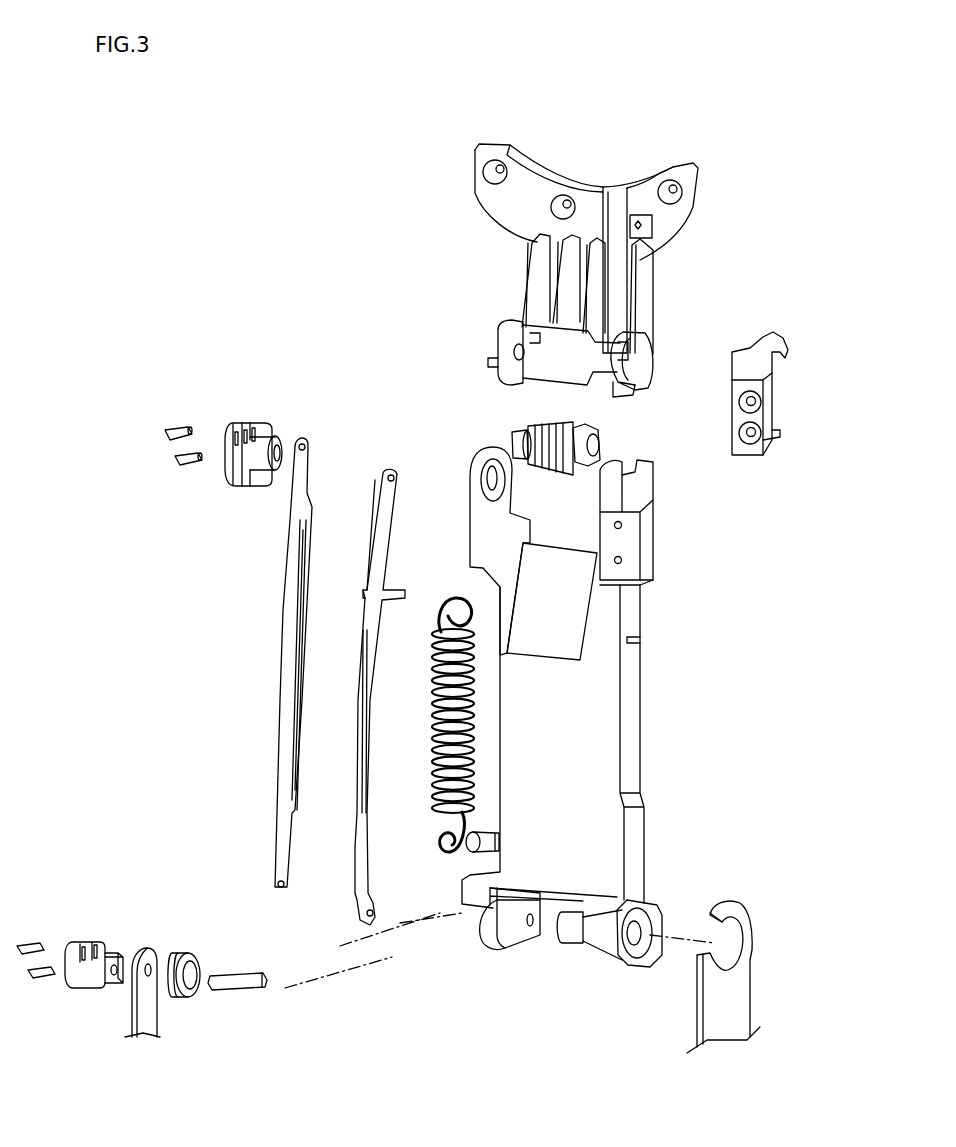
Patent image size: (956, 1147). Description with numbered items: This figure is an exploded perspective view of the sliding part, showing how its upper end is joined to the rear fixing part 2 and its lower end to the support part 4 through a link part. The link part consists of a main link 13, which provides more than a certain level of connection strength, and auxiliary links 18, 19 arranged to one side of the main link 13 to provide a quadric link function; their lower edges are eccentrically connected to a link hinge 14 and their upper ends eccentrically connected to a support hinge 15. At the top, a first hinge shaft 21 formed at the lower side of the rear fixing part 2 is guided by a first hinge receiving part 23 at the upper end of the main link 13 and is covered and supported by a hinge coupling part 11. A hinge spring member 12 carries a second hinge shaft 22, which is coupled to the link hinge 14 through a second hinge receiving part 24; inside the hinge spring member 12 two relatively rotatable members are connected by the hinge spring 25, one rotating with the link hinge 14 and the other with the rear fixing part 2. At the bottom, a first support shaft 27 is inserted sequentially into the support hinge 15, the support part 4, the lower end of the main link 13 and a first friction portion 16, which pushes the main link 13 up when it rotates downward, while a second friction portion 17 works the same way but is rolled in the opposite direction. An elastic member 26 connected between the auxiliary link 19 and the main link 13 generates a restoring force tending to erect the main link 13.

The rear fixing part 2 is at (532, 188).
The first hinge shaft 21 is at (641, 346).
The hinge coupling part 11 is at (783, 340).
The link hinge 14 is at (250, 422).
The auxiliary link 18 is at (283, 638).
The auxiliary link 19 is at (362, 735).
The elastic member 26 is at (437, 737).
The second hinge shaft 22 is at (513, 443).
The hinge spring 25 is at (580, 432).
The second hinge receiving part 24 is at (473, 476).
The first hinge receiving part 23 is at (633, 495).
The hinge spring member 12 is at (559, 483).
The main link 13 is at (600, 737).
The first friction portion 16 is at (517, 940).
The second friction portion 17 is at (567, 933).
The support hinge 15 is at (78, 942).
The support part 4 is at (157, 950).
The first support shaft 27 is at (233, 980).